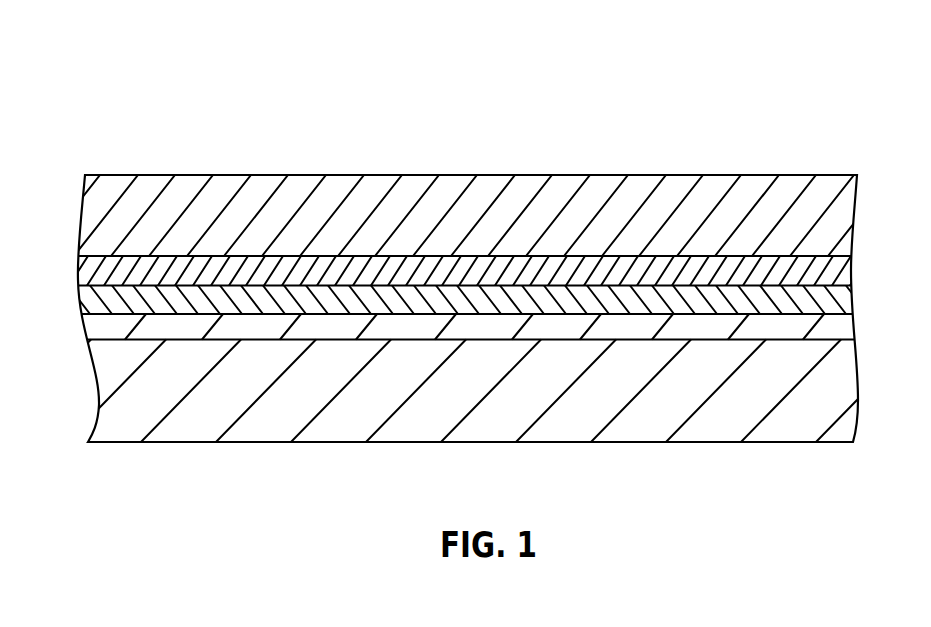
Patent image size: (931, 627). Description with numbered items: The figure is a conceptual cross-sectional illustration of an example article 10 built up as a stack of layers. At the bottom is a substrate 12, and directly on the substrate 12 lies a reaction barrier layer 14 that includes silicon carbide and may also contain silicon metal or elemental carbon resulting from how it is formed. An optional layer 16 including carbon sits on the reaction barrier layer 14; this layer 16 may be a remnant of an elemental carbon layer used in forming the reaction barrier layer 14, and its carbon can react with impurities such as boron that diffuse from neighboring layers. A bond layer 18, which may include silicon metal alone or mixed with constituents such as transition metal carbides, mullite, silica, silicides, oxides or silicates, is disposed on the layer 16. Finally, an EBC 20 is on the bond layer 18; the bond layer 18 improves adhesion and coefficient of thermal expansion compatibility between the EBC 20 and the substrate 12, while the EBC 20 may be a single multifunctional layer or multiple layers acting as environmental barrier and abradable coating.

The article 10 is at (66, 84).
The substrate 12 is at (111, 381).
The reaction barrier layer 14 is at (104, 326).
The layer 16 is at (101, 299).
The bond layer 18 is at (89, 266).
The EBC 20 is at (89, 205).